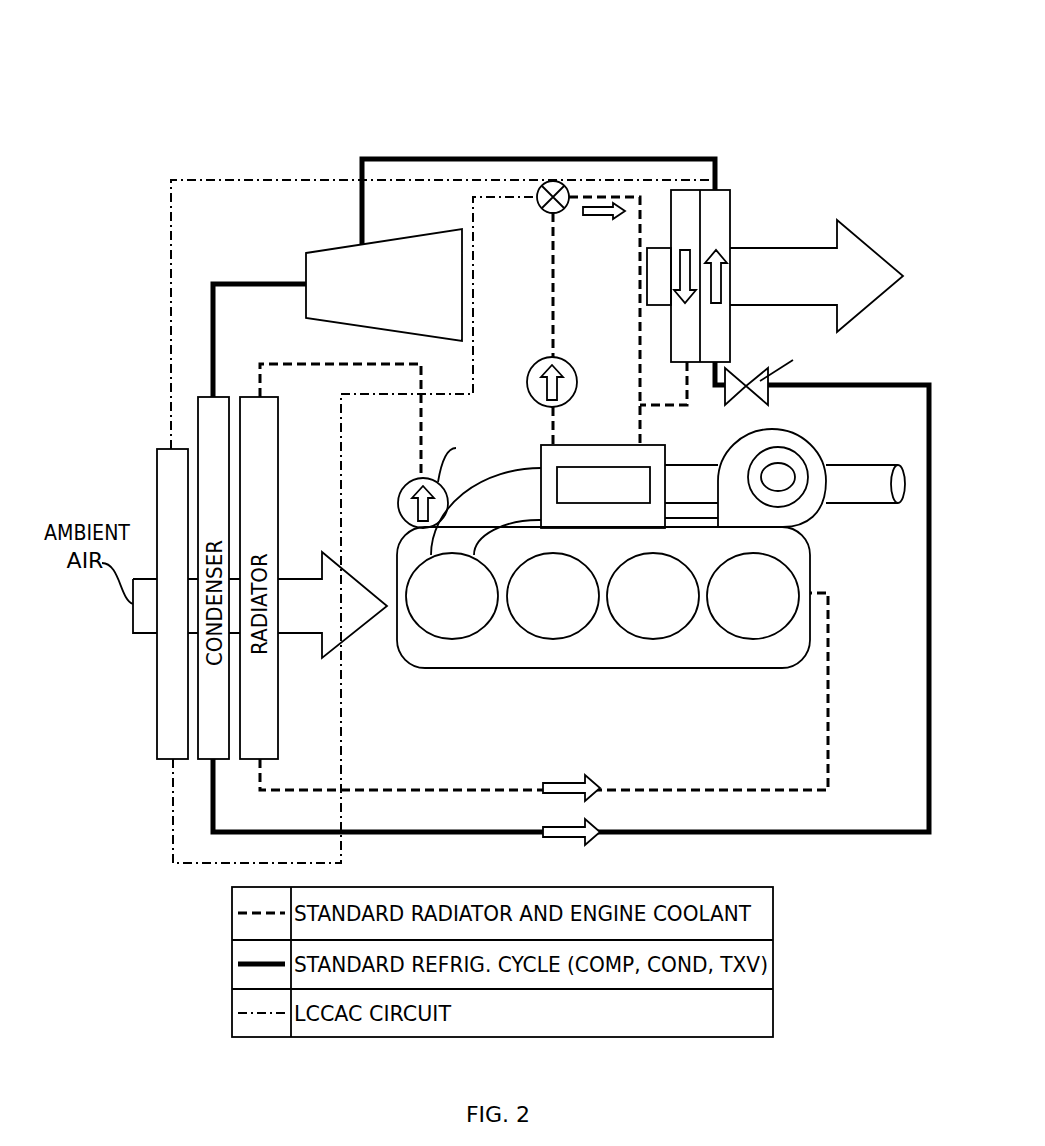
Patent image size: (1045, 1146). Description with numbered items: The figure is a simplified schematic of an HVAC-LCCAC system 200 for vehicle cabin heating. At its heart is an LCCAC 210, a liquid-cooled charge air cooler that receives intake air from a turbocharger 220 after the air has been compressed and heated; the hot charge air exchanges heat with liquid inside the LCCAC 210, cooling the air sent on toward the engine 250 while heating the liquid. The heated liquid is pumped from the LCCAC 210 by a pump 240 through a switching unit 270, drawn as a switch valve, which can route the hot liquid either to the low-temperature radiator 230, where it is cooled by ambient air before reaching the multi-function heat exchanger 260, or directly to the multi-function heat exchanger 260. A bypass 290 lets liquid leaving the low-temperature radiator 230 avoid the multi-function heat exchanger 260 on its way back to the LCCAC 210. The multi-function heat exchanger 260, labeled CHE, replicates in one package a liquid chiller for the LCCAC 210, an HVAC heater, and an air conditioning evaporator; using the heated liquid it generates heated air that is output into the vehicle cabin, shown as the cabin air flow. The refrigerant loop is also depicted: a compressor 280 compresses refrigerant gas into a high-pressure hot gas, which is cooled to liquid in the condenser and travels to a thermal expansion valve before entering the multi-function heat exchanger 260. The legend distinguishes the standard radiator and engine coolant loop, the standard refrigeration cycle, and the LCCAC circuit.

The HVAC-LCCAC system 200 is at (840, 58).
The LCCAC 210 is at (590, 500).
The turbocharger 220 is at (818, 456).
The low-temperature radiator 230 is at (142, 458).
The pump 240 is at (544, 360).
The engine 250 is at (603, 537).
The multi-function heat exchanger 260 is at (725, 190).
The switching unit 270 is at (547, 183).
The compressor 280 is at (306, 268).
The bypass 290 is at (641, 268).